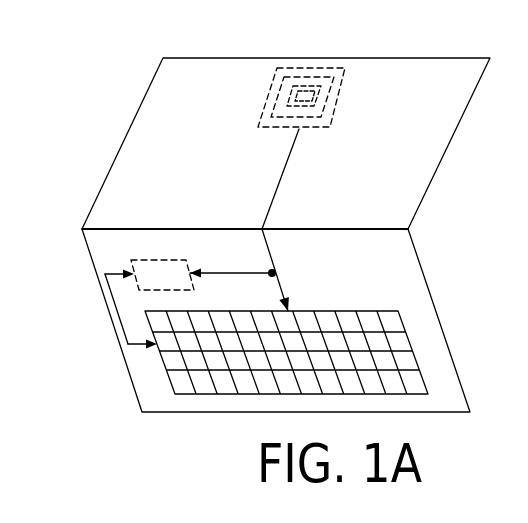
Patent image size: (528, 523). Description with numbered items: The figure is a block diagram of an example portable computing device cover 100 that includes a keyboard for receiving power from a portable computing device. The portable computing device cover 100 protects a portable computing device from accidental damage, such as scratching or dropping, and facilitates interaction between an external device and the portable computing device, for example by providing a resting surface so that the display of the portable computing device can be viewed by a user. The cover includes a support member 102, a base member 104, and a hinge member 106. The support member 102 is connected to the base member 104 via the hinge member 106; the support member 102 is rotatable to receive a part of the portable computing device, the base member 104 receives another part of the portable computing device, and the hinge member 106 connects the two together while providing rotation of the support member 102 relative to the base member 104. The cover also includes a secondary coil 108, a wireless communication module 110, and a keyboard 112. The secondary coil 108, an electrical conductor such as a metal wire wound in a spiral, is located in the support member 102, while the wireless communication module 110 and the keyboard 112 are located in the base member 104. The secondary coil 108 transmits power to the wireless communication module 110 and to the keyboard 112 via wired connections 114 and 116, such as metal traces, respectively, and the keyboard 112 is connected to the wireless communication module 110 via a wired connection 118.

The portable computing device cover 100 is at (257, 220).
The support member 102 is at (218, 58).
The base member 104 is at (427, 288).
The hinge member 106 is at (203, 229).
The secondary coil 108 is at (244, 99).
The wireless communication module 110 is at (165, 260).
The keyboard 112 is at (347, 311).
The wired connection 114 is at (256, 274).
The wired connection 116 is at (284, 287).
The wired connection 118 is at (112, 294).